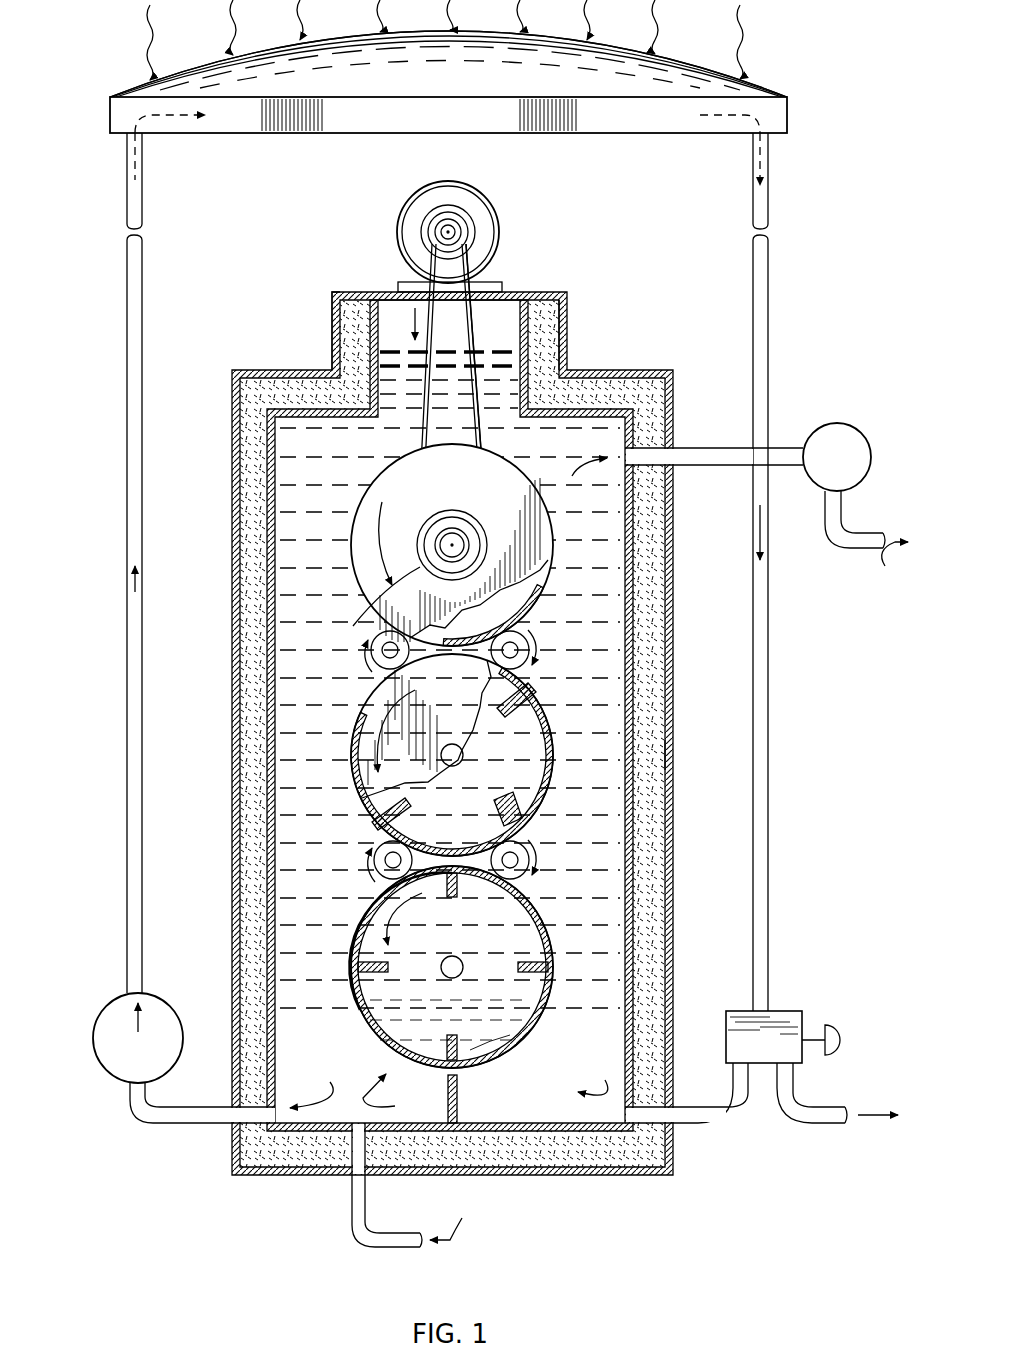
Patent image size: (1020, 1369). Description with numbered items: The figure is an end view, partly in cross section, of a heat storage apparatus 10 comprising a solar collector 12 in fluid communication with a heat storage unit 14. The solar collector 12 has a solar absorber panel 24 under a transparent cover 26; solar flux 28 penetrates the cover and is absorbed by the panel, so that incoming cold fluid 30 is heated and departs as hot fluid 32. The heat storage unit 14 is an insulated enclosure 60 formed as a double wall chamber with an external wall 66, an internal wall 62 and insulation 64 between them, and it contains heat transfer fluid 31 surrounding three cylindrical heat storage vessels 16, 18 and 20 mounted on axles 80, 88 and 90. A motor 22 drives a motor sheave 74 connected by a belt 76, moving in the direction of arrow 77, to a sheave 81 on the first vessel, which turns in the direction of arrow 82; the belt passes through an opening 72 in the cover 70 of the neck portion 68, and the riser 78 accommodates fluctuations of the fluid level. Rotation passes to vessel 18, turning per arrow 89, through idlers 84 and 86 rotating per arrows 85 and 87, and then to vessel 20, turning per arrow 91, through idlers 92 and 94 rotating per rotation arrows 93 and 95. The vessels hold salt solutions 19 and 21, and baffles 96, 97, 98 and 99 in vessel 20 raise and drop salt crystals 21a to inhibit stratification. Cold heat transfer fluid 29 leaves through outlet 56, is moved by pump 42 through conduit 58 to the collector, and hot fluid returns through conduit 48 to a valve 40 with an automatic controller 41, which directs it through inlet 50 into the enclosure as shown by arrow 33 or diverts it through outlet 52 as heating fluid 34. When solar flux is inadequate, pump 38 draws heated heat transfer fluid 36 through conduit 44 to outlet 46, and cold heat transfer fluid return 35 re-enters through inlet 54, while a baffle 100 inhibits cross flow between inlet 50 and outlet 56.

The heat storage apparatus 10 is at (800, 70).
The solar collector 12 is at (448, 297).
The heat storage unit 14 is at (455, 733).
The heat storage vessel 16 is at (453, 545).
The heat storage vessel 18 is at (453, 755).
The salt solution 19 is at (545, 748).
The heat storage vessel 20 is at (455, 975).
The salt solution 21 is at (546, 1006).
The salt crystals 21a is at (516, 1040).
The motor 22 is at (444, 225).
The solar absorber panel 24 is at (330, 130).
The transparent cover 26 is at (270, 56).
The solar flux 28 is at (150, 43).
The cold heat transfer fluid 29 is at (127, 556).
The incoming cold fluid 30 is at (185, 120).
The heat transfer fluid 31 is at (298, 457).
The hot fluid 32 is at (700, 118).
The arrow 33 is at (594, 1075).
The heating fluid 34 is at (870, 1120).
The cold heat transfer fluid return 35 is at (424, 1157).
The heated heat transfer fluid 36 is at (738, 524).
The pump 38 is at (865, 438).
The valve 40 is at (790, 1013).
The automatic controller 41 is at (840, 1036).
The pump 42 is at (115, 1010).
The conduit 44 is at (787, 442).
The outlet 46 is at (845, 512).
The conduit 48 is at (768, 782).
The inlet 50 is at (720, 1122).
The outlet 52 is at (805, 1124).
The inlet 54 is at (352, 1208).
The outlet 56 is at (165, 1124).
The conduit 58 is at (127, 618).
The insulated enclosure 60 is at (232, 532).
The internal wall 62 is at (630, 668).
The insulation 64 is at (650, 716).
The external wall 66 is at (668, 758).
The neck portion 68 is at (400, 296).
The cover 70 is at (520, 300).
The opening 72 is at (473, 320).
The motor sheave 74 is at (440, 230).
The belt 76 is at (520, 374).
The arrow 77 is at (378, 312).
The riser 78 is at (380, 592).
The axle 80 is at (452, 540).
The sheave 81 is at (490, 556).
The arrow 82 is at (385, 553).
The idler 84 is at (385, 670).
The arrow 85 is at (370, 656).
The idler 86 is at (528, 640).
The arrow 87 is at (532, 651).
The axle 88 is at (452, 748).
The arrow 89 is at (375, 737).
The axle 90 is at (448, 974).
The arrow 91 is at (385, 916).
The idler 92 is at (385, 881).
The rotation arrow 93 is at (372, 861).
The idler 94 is at (545, 822).
The rotation arrow 95 is at (532, 861).
The baffle 96 is at (495, 1056).
The baffle 97 is at (548, 966).
The baffle 98 is at (462, 885).
The baffle 99 is at (358, 968).
The baffle 100 is at (458, 1106).